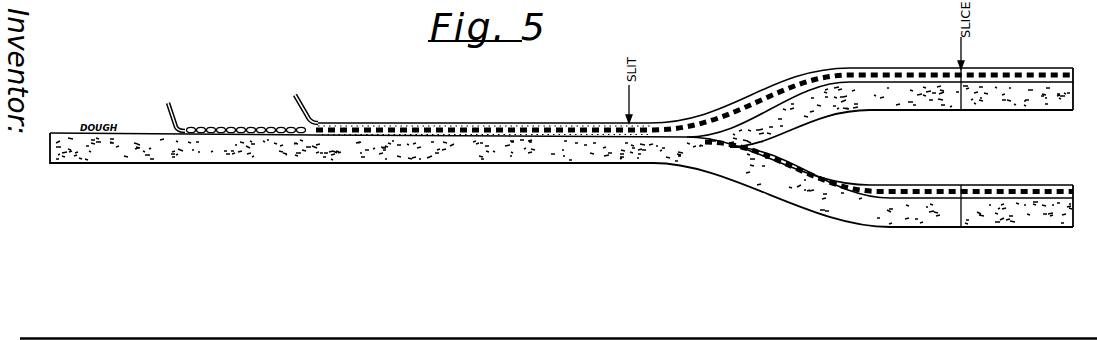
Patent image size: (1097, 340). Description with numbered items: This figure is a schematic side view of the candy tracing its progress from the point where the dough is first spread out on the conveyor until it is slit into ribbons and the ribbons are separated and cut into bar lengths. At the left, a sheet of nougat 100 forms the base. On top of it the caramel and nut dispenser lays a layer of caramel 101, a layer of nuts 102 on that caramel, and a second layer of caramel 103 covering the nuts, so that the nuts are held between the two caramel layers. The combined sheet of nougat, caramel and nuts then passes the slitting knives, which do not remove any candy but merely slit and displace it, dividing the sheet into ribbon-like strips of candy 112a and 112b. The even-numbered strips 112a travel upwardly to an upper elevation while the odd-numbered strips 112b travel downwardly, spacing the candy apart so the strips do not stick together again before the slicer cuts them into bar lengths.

The layer of nougat 100 is at (388, 152).
The layer of caramel 101 is at (184, 128).
The layer of nuts 102 is at (259, 126).
The second layer of caramel 103 is at (314, 113).
The ribbon-like strips of candy 112a is at (812, 78).
The ribbon-like strips of candy 112b is at (781, 204).